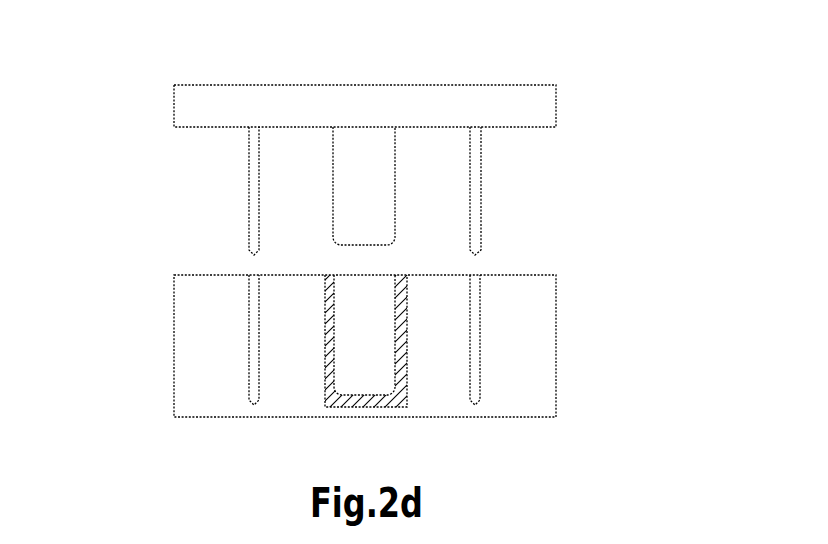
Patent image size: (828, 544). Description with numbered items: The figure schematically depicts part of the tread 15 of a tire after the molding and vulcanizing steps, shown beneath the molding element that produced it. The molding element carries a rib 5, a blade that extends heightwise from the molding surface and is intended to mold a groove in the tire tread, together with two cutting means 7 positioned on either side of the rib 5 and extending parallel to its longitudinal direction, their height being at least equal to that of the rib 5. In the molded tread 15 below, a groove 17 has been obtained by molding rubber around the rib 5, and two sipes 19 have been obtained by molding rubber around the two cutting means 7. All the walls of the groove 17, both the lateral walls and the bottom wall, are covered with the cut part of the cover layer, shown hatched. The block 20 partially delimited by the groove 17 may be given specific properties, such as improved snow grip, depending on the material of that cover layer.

The rib 5 is at (369, 165).
The cutting means 7 is at (489, 194).
The tread 15 is at (584, 276).
The groove 17 is at (348, 343).
The sipes 19 is at (249, 331).
The block 20 is at (550, 441).